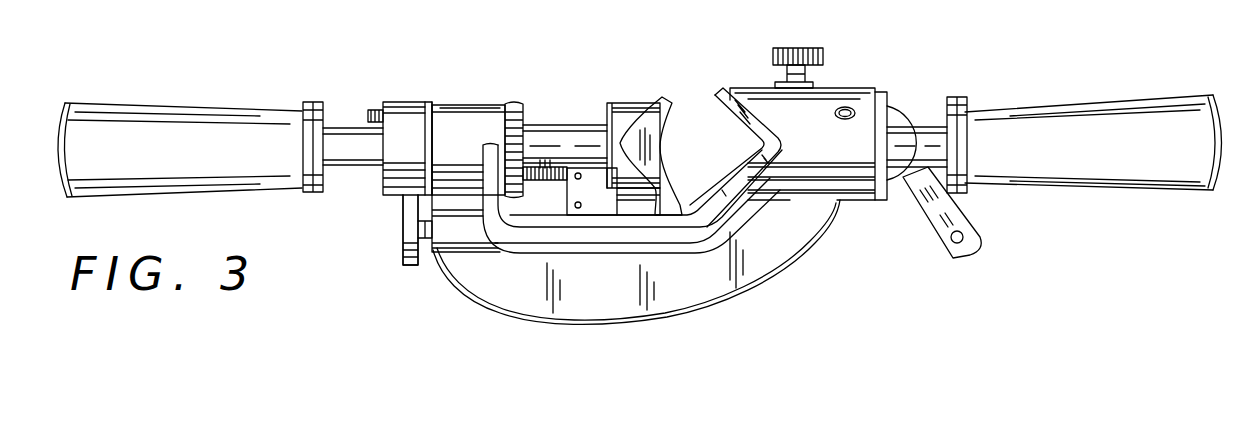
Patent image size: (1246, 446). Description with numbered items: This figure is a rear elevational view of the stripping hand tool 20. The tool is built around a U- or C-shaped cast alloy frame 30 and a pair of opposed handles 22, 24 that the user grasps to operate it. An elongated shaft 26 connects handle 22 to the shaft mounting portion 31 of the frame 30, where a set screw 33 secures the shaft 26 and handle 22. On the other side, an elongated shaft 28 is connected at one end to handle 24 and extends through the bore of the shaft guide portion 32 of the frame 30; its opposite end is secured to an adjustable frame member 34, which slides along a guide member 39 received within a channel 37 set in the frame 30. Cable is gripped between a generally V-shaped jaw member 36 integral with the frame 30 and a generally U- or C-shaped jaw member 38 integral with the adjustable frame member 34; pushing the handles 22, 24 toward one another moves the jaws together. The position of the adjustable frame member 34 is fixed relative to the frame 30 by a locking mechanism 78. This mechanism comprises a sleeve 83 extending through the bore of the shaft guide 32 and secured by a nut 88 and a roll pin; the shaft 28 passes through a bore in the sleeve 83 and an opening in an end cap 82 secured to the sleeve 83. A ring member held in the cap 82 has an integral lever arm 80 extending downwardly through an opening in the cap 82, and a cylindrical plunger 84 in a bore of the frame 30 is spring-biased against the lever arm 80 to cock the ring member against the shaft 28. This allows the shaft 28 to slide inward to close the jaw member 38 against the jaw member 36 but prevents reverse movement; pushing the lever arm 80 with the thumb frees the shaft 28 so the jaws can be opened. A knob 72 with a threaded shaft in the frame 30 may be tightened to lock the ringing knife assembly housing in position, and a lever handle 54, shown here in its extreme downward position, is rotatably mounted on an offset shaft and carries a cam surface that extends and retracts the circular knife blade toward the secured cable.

The hand tool 20 is at (486, 320).
The handle 22 is at (1056, 113).
The handle 24 is at (168, 112).
The elongated shaft 26 is at (925, 133).
The elongated shaft 28 is at (350, 128).
The frame 30 is at (770, 263).
The shaft mounting portion 31 is at (852, 152).
The shaft guide portion 32 is at (453, 108).
The set screw 33 is at (846, 107).
The adjustable frame member 34 is at (632, 110).
The jaw member 36 is at (742, 130).
The channel 37 is at (552, 216).
The jaw member 38 is at (663, 147).
The guide member 39 is at (638, 210).
The lever handle 54 is at (948, 240).
The knob 72 is at (792, 48).
The locking mechanism 78 is at (378, 203).
The lever arm 80 is at (407, 230).
The end cap 82 is at (397, 102).
The sleeve 83 is at (431, 102).
The cylindrical plunger 84 is at (423, 236).
The nut 88 is at (513, 106).